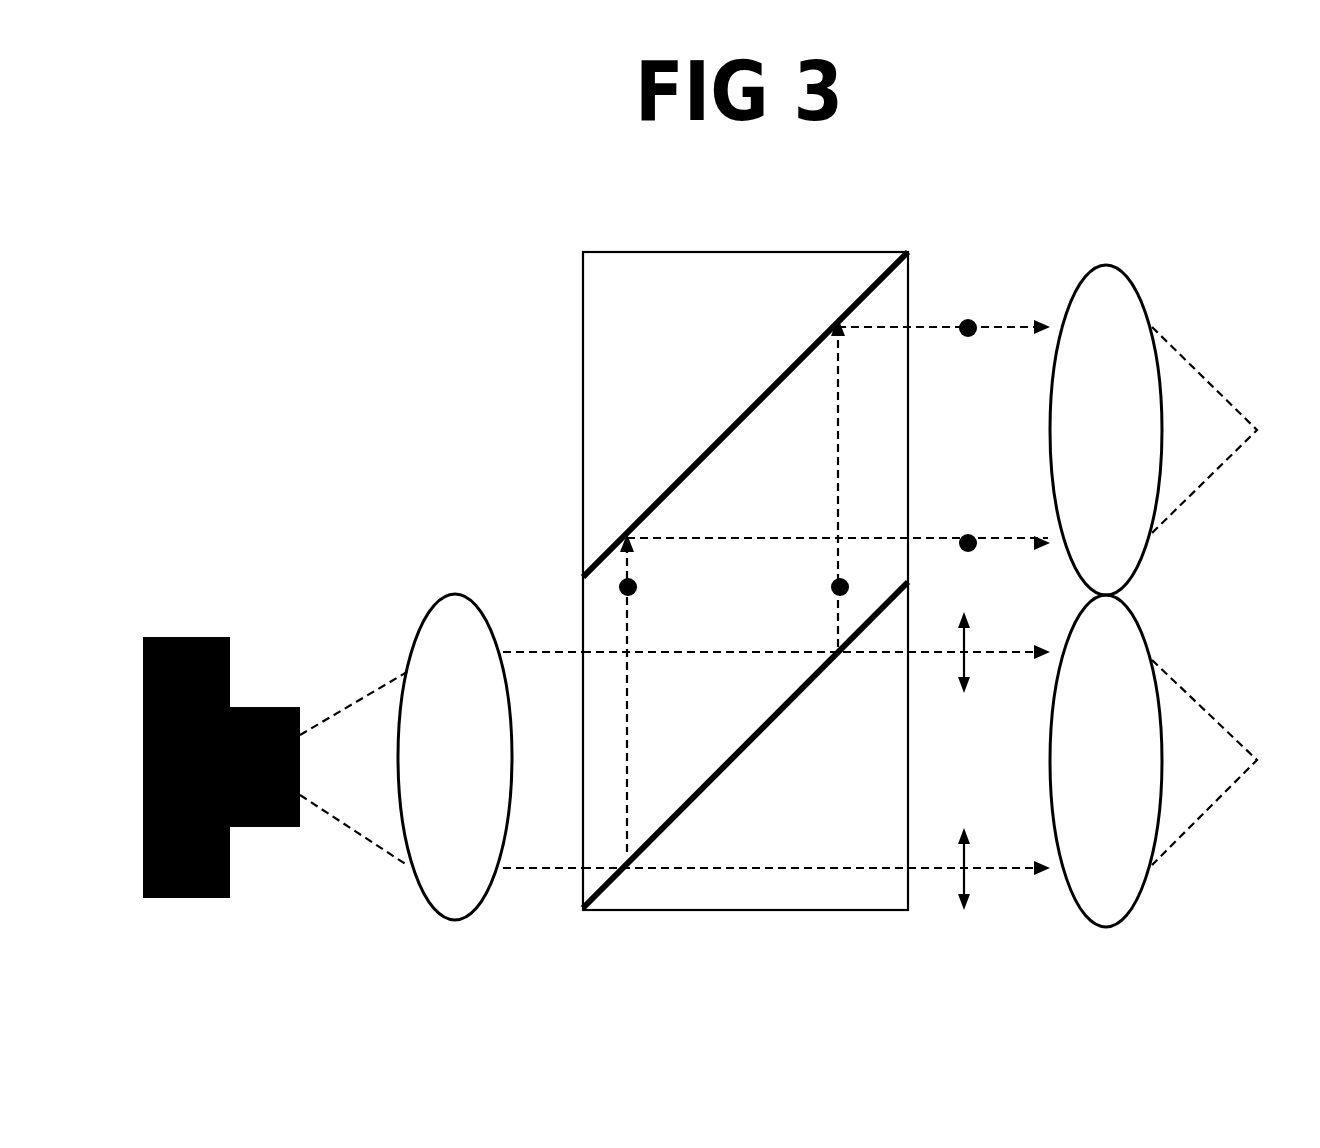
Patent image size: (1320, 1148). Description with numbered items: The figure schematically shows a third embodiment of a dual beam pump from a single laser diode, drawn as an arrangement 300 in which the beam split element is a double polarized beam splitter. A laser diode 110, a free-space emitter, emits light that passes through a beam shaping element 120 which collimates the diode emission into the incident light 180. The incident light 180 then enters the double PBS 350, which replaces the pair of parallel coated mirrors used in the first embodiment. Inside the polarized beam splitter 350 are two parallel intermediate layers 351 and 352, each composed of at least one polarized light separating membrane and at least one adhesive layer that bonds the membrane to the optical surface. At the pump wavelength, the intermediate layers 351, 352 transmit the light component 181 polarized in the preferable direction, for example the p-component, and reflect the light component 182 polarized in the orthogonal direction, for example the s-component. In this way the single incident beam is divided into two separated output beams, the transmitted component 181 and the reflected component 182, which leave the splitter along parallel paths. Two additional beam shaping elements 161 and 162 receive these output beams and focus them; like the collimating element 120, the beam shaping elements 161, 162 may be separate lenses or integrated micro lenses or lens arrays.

The laser diode 110 is at (221, 767).
The beam shaping element 120 is at (455, 757).
The incident light 180 is at (550, 760).
The light component polarized in the preferable direction 181 is at (920, 761).
The light component polarized in the orthogonal direction 182 is at (938, 587).
The polarization beam splitter assembly 300 is at (655, 581).
The double PBS 350 is at (745, 581).
The intermediate layer 351 is at (745, 414).
The intermediate layer 352 is at (745, 745).
The beam shaping element 161 is at (1106, 761).
The beam shaping element 162 is at (1106, 430).